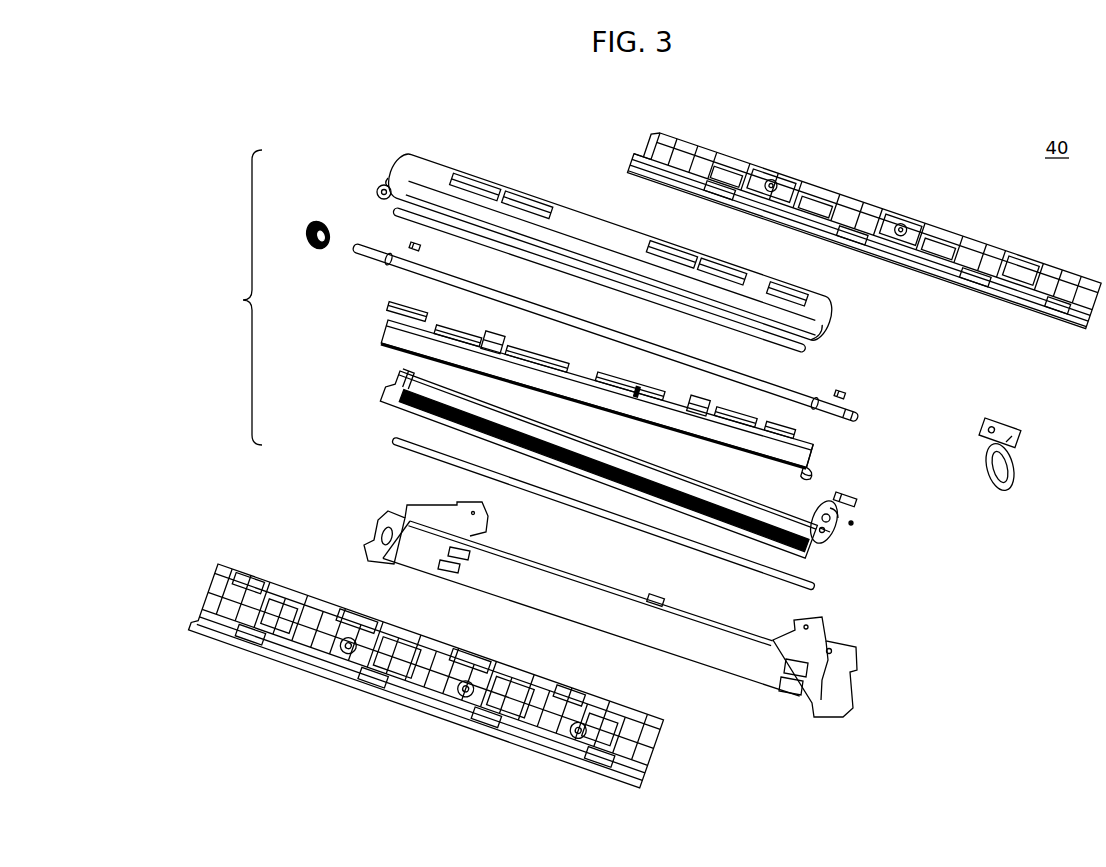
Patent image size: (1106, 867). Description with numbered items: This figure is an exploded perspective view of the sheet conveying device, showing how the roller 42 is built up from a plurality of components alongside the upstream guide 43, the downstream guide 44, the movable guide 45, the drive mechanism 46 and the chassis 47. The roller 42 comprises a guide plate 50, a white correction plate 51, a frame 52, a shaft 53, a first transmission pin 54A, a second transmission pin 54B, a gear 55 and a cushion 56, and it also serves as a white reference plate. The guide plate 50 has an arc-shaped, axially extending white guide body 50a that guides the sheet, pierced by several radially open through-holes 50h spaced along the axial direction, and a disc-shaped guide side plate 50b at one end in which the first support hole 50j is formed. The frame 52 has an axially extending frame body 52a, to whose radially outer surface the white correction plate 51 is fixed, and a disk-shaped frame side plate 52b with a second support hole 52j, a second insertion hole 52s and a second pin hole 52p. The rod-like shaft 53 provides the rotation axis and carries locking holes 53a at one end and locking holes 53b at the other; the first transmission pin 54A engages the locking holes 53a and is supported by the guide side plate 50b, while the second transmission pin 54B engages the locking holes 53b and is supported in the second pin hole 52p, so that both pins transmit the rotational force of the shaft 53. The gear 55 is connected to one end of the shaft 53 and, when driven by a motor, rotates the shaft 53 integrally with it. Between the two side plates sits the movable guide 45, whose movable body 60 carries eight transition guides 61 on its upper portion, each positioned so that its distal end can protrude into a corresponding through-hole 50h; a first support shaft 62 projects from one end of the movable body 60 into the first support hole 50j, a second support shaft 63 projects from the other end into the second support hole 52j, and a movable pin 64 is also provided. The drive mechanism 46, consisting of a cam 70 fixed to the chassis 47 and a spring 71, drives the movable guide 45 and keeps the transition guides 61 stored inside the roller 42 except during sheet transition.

The roller 42 is at (238, 297).
The upstream guide 43 is at (372, 688).
The downstream guide 44 is at (880, 205).
The movable guide 45 is at (812, 445).
The drive mechanism 46 is at (1024, 427).
The chassis 47 is at (718, 664).
The guide plate 50 is at (572, 231).
The guide body 50a is at (600, 232).
The guide side plate 50b is at (376, 192).
The through-holes 50h is at (512, 183).
The first support hole 50j is at (386, 180).
The white correction plate 51 is at (395, 438).
The frame 52 is at (631, 473).
The frame body 52a is at (788, 543).
The frame side plate 52b is at (842, 530).
The second support hole 52j is at (836, 536).
The second pin hole 52p is at (854, 523).
The second insertion hole 52s is at (832, 522).
The shaft 53 is at (582, 335).
The locking holes 53a is at (390, 262).
The locking holes 53b is at (813, 405).
The first transmission pin 54A is at (410, 246).
The second transmission pin 54B is at (843, 392).
The gear 55 is at (306, 228).
The cushion 56 is at (808, 347).
The movable body 60 is at (601, 394).
The transition guide 61 is at (518, 344).
The first support shaft 62 is at (385, 318).
The second support shaft 63 is at (814, 476).
The movable pin 64 is at (860, 500).
The cam 70 is at (1006, 492).
The spring 71 is at (627, 436).